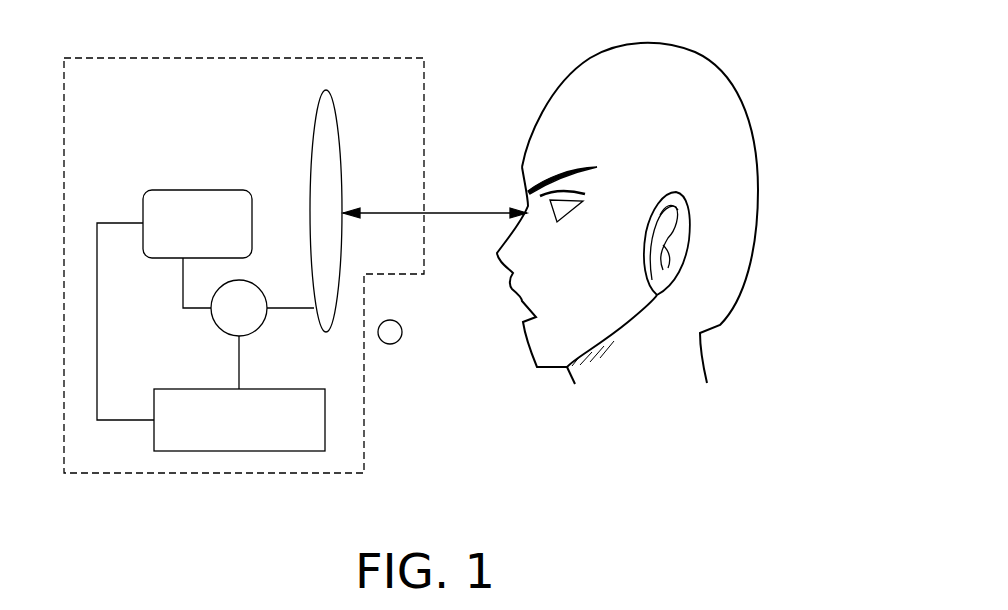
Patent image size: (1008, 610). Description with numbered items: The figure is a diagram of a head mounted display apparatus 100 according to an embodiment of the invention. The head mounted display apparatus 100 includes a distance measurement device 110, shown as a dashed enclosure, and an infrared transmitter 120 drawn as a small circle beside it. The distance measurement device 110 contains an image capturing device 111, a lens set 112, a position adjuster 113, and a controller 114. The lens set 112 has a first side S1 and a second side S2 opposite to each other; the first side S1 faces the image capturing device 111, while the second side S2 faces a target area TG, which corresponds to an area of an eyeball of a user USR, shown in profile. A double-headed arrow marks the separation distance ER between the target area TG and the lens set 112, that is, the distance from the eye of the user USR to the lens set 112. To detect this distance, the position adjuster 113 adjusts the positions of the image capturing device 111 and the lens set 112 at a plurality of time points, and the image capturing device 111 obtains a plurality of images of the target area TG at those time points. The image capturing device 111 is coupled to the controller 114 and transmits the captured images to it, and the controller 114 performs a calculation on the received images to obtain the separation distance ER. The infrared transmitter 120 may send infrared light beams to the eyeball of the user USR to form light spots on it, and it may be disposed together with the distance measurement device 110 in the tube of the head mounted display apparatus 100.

The head mounted display apparatus 100 is at (668, 497).
The distance measurement device 110 is at (120, 57).
The image capturing device 111 is at (197, 189).
The lens set 112 is at (330, 91).
The position adjuster 113 is at (218, 330).
The controller 114 is at (262, 388).
The infrared transmitter 120 is at (395, 341).
The first side S1 is at (313, 143).
The second side S2 is at (339, 143).
The separation distance ER is at (435, 197).
The target area TG is at (524, 207).
The user USR is at (718, 78).